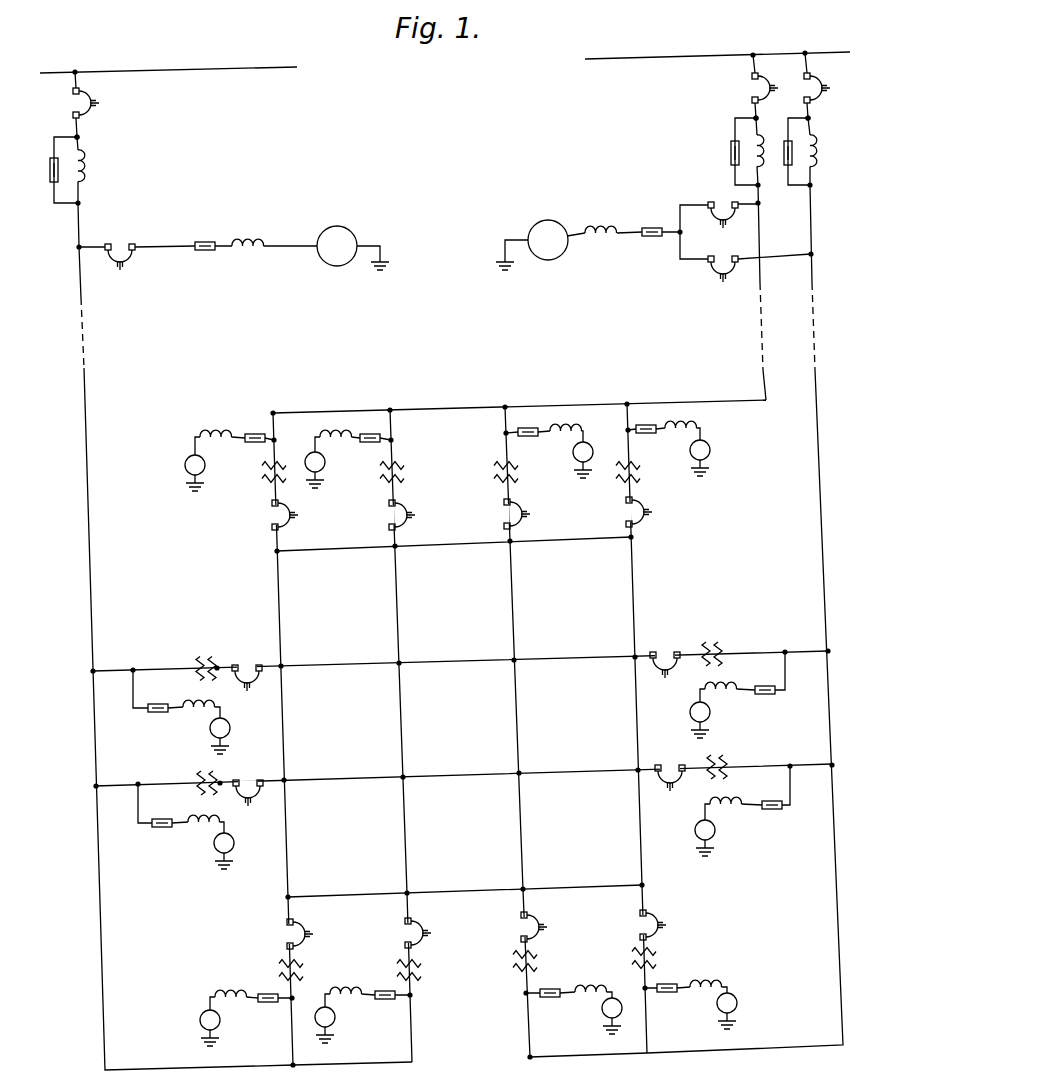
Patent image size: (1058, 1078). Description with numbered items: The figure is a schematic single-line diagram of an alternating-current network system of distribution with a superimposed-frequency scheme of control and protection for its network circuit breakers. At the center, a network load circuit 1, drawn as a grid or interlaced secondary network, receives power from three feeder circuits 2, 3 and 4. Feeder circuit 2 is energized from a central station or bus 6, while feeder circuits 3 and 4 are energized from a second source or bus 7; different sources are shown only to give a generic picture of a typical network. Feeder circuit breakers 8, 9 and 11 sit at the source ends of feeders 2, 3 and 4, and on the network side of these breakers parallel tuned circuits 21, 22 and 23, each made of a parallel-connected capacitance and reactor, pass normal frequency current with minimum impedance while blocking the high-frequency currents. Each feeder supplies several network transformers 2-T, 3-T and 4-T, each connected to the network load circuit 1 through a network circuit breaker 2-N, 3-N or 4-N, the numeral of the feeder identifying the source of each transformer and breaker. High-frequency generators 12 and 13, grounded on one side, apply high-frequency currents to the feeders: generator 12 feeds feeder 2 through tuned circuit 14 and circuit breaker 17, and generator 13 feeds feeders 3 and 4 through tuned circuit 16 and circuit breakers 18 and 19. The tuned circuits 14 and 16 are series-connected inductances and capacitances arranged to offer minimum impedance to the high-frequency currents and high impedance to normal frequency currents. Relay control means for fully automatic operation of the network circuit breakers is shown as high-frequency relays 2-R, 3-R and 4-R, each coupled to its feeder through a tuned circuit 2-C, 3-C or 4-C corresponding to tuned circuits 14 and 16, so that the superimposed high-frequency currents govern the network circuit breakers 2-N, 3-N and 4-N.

The network load circuit 1 is at (475, 731).
The feeder circuit 2 is at (82, 131).
The feeder circuit 3 is at (750, 109).
The feeder circuit 4 is at (804, 109).
The central station or bus 6 is at (135, 70).
The second source or bus 7 is at (685, 58).
The feeder circuit breaker 8 is at (82, 104).
The feeder circuit breaker 9 is at (762, 88).
The feeder circuit breaker 11 is at (815, 85).
The high-frequency generator 12 is at (350, 235).
The high-frequency generator 13 is at (534, 228).
The tuned circuit 14 is at (218, 239).
The tuned circuit 16 is at (640, 224).
The circuit breaker 17 is at (115, 243).
The circuit breaker 18 is at (732, 200).
The circuit breaker 19 is at (724, 257).
The parallel tuned circuit 21 is at (84, 172).
The parallel tuned circuit 22 is at (730, 154).
The parallel tuned circuit 23 is at (816, 153).
The tuned circuit 2-C is at (271, 840).
The network circuit breaker 2-N is at (225, 658).
The high-frequency relay 2-R is at (285, 882).
The network transformer 2-T is at (302, 806).
The tuned circuit 3-C is at (230, 432).
The network circuit breaker 3-N is at (445, 514).
The high-frequency relay 3-R is at (185, 466).
The network transformer 3-T is at (264, 480).
The tuned circuit 4-C is at (658, 825).
The network circuit breaker 4-N is at (586, 785).
The high-frequency relay 4-R is at (654, 868).
The network transformer 4-T is at (625, 794).